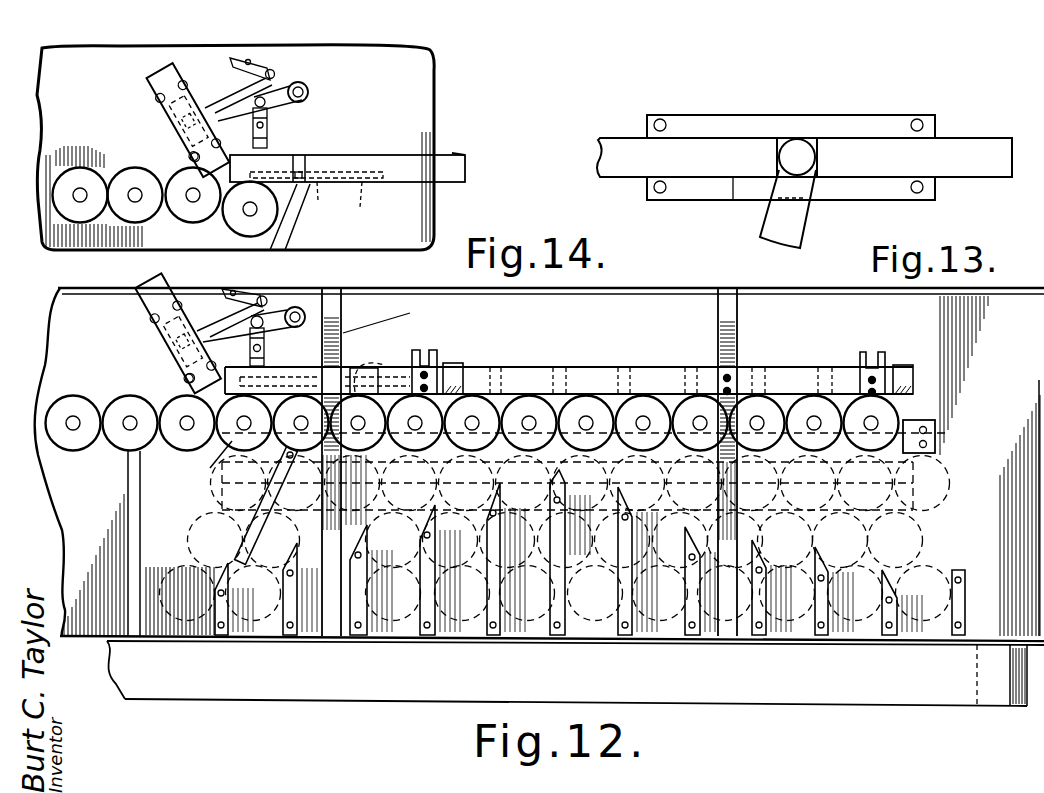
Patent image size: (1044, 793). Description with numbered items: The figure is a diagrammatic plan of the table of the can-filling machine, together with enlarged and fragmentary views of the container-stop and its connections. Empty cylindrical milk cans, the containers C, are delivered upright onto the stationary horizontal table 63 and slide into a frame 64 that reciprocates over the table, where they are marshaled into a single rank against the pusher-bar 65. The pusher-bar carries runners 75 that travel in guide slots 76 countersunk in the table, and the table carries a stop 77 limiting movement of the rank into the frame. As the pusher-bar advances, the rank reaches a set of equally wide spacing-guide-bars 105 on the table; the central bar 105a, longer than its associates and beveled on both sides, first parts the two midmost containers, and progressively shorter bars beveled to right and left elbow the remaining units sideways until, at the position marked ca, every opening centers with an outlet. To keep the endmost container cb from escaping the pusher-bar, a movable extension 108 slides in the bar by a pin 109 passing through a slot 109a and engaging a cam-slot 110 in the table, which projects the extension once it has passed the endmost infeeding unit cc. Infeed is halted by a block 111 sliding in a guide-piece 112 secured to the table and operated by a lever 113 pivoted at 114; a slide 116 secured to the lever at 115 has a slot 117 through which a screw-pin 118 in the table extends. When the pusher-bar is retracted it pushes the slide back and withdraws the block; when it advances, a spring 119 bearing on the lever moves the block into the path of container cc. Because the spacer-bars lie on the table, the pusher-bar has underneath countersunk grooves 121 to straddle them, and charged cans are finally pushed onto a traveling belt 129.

In FIG. 14, the stationary horizontal table 63 is at (235, 147).
In FIG. 12, the stationary horizontal table 63 is at (539, 464).
In FIG. 12, the frame 64 is at (648, 370).
In FIG. 14, the pusher-bar 65 is at (453, 153).
In FIG. 12, the pusher-bar 65 is at (650, 410).
In FIG. 12, the runners 75 is at (765, 333).
In FIG. 12, the guide slots 76 is at (340, 297).
In FIG. 12, the stop 77 is at (936, 437).
In FIG. 12, the spacing-guide-bars 105 is at (607, 641).
In FIG. 12, the central bar 105a is at (540, 641).
In FIG. 14, the movable extension 108 is at (378, 208).
In FIG. 12, the movable extension 108 is at (382, 365).
In FIG. 14, the pin 109 is at (312, 168).
In FIG. 12, the pin 109 is at (276, 371).
In FIG. 14, the slot 109a is at (324, 183).
In FIG. 12, the slot 109a is at (356, 368).
In FIG. 12, the cam-slot 110 is at (243, 535).
In FIG. 14, the block 111 is at (198, 168).
In FIG. 13, the block 111 is at (804, 157).
In FIG. 12, the block 111 is at (190, 389).
In FIG. 14, the guide-piece 112 is at (181, 129).
In FIG. 13, the guide-piece 112 is at (887, 93).
In FIG. 12, the guide-piece 112 is at (172, 357).
In FIG. 14, the lever 113 is at (230, 112).
In FIG. 13, the lever 113 is at (790, 226).
In FIG. 12, the lever 113 is at (206, 326).
In FIG. 14, the pivot 114 is at (310, 94).
In FIG. 12, the pivot 114 is at (294, 307).
In FIG. 14, the connection 115 is at (276, 76).
In FIG. 12, the connection 115 is at (302, 310).
In FIG. 14, the slide 116 is at (270, 141).
In FIG. 12, the slide 116 is at (257, 341).
In FIG. 14, the slot 117 is at (268, 127).
In FIG. 12, the slot 117 is at (257, 348).
In FIG. 14, the screw-pin 118 is at (306, 104).
In FIG. 12, the screw-pin 118 is at (252, 344).
In FIG. 12, the spring 119 is at (262, 296).
In FIG. 12, the countersunk grooves 121 is at (550, 368).
In FIG. 12, the traveling belt 129 is at (575, 673).
In FIG. 12, the containers C is at (700, 412).
In FIG. 12, the advanced container position ca is at (974, 602).
In FIG. 14, the endmost container cb is at (258, 222).
In FIG. 12, the endmost container cb is at (180, 652).
In FIG. 14, the endmost infeeding container cc is at (137, 207).
In FIG. 12, the endmost infeeding container cc is at (187, 452).